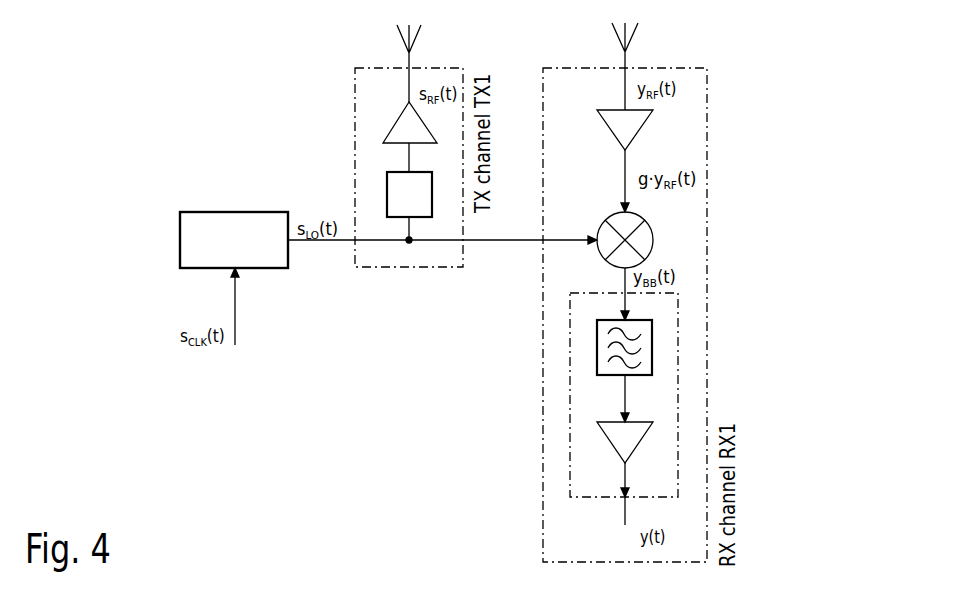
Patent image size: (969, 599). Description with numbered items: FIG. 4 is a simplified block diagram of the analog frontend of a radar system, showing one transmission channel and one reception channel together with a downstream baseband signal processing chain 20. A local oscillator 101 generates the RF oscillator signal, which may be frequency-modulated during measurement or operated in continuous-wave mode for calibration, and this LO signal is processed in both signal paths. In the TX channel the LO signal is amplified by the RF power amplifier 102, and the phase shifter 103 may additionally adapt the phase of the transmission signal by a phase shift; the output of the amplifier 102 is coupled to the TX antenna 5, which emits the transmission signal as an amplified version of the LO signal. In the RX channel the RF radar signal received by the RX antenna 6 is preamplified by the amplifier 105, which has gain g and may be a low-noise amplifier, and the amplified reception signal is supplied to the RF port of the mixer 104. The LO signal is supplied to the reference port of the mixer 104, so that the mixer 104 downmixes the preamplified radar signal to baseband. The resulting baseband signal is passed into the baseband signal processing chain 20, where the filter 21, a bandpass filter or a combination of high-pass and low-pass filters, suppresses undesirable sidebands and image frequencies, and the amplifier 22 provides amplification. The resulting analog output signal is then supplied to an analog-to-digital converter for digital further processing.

The TX antenna 5 is at (396, 46).
The RX antenna 6 is at (640, 40).
The baseband signal processing chain 20 is at (603, 497).
The filter 21 is at (597, 350).
The amplifier 22 is at (605, 445).
The local oscillator 101 is at (224, 212).
The RF power amplifier 102 is at (393, 130).
The phase shifter 103 is at (387, 172).
The mixer 104 is at (655, 232).
The amplifier 105 is at (650, 130).